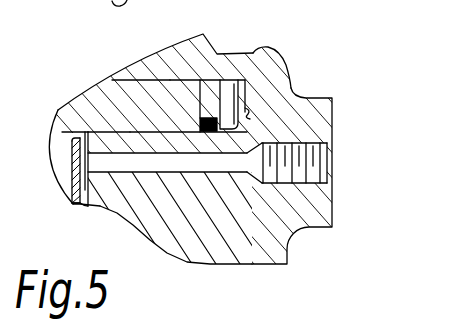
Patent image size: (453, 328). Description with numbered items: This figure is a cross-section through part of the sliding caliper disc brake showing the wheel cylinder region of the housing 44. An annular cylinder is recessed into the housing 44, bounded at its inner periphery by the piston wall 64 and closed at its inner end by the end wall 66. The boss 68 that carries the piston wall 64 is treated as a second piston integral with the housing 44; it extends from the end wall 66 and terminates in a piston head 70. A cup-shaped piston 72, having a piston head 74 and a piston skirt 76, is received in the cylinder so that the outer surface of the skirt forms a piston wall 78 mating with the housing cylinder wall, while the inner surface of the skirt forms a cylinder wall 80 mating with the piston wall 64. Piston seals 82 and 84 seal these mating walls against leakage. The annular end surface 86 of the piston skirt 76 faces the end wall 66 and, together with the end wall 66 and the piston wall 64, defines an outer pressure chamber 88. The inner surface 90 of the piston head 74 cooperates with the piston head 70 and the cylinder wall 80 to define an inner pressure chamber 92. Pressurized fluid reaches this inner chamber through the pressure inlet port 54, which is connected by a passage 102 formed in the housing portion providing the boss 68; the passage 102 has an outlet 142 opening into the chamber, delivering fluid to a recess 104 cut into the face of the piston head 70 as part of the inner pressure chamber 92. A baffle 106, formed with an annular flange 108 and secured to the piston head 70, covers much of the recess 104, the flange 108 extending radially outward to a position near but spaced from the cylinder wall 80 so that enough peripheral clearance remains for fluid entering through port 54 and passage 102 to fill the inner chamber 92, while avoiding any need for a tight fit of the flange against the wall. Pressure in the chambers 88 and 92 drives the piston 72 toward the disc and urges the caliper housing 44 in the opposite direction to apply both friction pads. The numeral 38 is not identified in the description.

The housing 38 is at (323, 89).
The housing 44 is at (190, 52).
The pressure inlet port 54 is at (329, 165).
The piston wall 64 is at (159, 126).
The end wall 66 is at (286, 70).
The boss 68 is at (144, 208).
The piston head 70 is at (68, 208).
The cup-shaped piston 72 is at (65, 97).
The piston head 74 is at (58, 132).
The piston skirt 76 is at (113, 100).
The piston wall 78 is at (119, 114).
The cylinder wall 80 is at (100, 130).
The piston seal 82 is at (166, 86).
The piston seal 84 is at (218, 118).
The annular end surface 86 is at (246, 96).
The outer pressure chamber 88 is at (250, 104).
The inner surface 90 is at (60, 150).
The inner pressure chamber 92 is at (60, 159).
The passage 102 is at (209, 160).
The recess 104 is at (88, 200).
The baffle 106 is at (76, 191).
The annular flange 108 is at (62, 111).
The outlet 142 is at (112, 205).